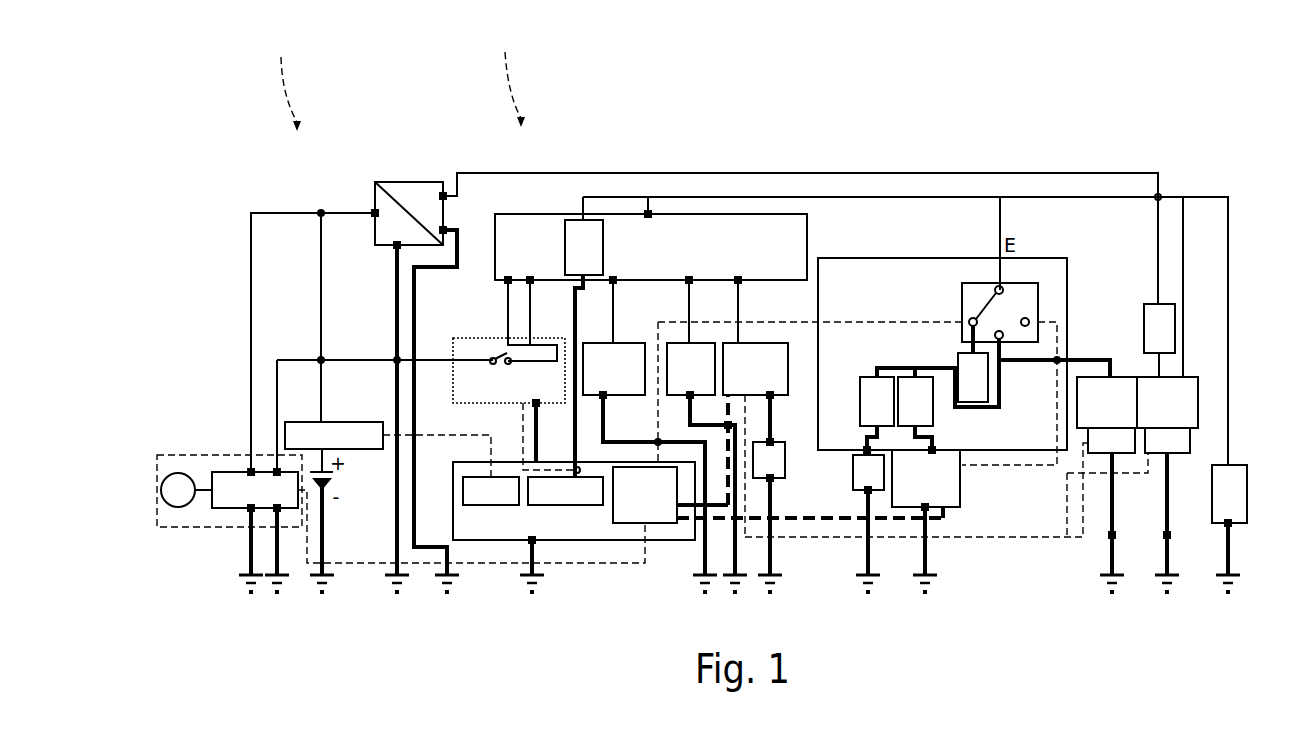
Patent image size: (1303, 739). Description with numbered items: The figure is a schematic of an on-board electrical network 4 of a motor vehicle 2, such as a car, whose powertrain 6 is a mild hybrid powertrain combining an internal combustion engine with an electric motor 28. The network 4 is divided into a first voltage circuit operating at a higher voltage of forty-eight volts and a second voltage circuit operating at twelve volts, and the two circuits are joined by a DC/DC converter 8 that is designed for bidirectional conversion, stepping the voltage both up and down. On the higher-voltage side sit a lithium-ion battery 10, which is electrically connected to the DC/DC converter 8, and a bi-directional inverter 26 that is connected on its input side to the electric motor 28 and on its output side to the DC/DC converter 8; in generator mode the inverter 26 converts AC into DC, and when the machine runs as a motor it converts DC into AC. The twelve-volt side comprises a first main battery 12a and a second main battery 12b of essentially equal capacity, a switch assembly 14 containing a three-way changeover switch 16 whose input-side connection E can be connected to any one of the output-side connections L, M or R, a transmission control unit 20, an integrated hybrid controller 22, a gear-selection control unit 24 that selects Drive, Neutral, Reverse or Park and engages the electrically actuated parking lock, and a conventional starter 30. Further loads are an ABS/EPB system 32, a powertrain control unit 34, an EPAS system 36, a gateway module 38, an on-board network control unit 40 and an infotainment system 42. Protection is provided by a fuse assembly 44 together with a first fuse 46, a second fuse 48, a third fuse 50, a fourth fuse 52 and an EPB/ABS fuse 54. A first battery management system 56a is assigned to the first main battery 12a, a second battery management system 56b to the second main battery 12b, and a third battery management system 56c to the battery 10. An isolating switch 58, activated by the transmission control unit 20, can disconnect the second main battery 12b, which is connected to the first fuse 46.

The motor vehicle 2 is at (1166, 96).
The on-board electrical network 4 is at (1153, 128).
The powertrain 6 is at (199, 428).
The DC/DC converter 8 is at (412, 180).
The battery 10 is at (318, 449).
The first main battery 12a is at (1147, 416).
The second main battery 12b is at (1086, 416).
The switch assembly 14 is at (942, 354).
The 3-way changeover switch 16 is at (957, 313).
The transmission control unit 20 is at (926, 477).
The integrated hybrid controller 22 is at (893, 475).
The gear-selection control unit 24 is at (853, 486).
The inverter 26 is at (239, 503).
The electric motor 28 is at (178, 508).
The starter 30 is at (1213, 506).
The ABS/EPB system 32 is at (549, 504).
The powertrain control unit 34 is at (629, 508).
The EPAS system 36 is at (598, 381).
The gateway module 38 is at (674, 381).
The on-board network control unit 40 is at (739, 381).
The infotainment system 42 is at (755, 474).
The fuse assembly 44 is at (632, 260).
The first fuse 46 is at (899, 416).
The second fuse 48 is at (861, 416).
The third fuse 50 is at (958, 391).
The fourth fuse 52 is at (1144, 342).
The EPB/ABS fuse 54 is at (568, 260).
The first battery management system 56a is at (1146, 454).
The second battery management system 56b is at (1090, 454).
The third battery management system 56c is at (468, 504).
The isolating switch 58 is at (480, 337).